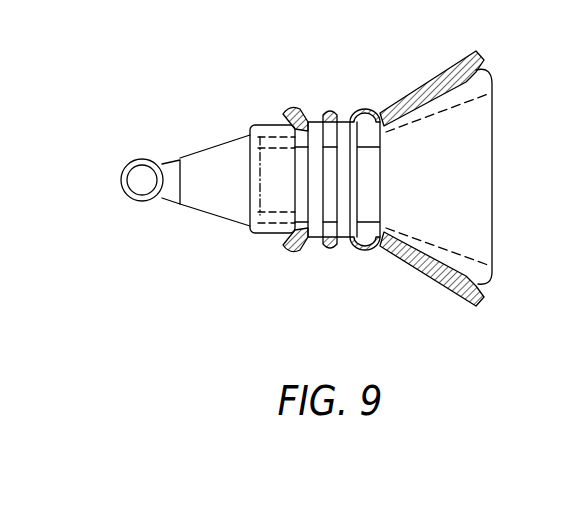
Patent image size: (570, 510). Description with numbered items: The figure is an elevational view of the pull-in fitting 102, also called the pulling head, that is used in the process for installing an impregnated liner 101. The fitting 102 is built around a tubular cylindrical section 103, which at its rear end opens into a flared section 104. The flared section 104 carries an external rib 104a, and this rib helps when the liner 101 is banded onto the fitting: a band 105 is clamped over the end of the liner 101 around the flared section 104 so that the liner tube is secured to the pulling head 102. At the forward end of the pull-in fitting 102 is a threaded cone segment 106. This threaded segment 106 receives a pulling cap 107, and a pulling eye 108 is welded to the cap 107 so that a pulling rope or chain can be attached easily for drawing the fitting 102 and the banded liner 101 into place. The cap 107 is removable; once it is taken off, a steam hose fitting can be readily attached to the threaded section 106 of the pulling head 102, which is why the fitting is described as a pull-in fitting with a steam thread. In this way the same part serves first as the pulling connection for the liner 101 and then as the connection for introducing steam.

The impregnated liner 101 is at (452, 282).
The pull-in fitting 102 is at (202, 241).
The tubular cylindrical section 103 is at (333, 170).
The flared section 104 is at (467, 122).
The external rib 104a is at (380, 252).
The band 105 is at (315, 250).
The threaded cone segment 106 is at (277, 193).
The pulling cap 107 is at (218, 145).
The pulling eye 108 is at (118, 168).